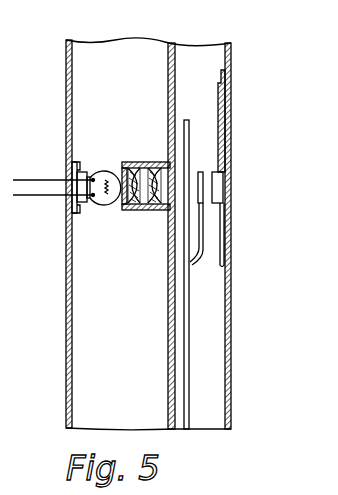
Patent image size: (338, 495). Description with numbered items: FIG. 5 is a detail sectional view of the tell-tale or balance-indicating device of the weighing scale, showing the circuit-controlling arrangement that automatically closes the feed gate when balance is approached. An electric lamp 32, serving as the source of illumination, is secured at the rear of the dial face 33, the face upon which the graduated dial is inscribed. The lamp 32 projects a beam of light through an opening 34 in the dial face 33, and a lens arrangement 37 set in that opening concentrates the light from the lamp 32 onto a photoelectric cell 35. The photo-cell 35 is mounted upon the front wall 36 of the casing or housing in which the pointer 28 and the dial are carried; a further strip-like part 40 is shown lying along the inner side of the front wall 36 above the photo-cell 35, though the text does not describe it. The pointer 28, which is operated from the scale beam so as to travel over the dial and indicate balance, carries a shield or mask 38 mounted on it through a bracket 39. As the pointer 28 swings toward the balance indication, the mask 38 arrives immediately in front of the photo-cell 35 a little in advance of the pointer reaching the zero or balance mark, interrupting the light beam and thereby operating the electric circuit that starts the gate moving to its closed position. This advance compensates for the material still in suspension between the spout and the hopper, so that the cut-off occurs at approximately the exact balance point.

The pointer 28 is at (188, 117).
The electric lamp 32 is at (100, 169).
The dial face 33 is at (169, 292).
The opening 34 is at (162, 212).
The photoelectric cell 35 is at (224, 181).
The front wall 36 is at (231, 241).
The lens arrangement 37 is at (147, 163).
The shield or mask 38 is at (201, 171).
The bracket 39 is at (201, 260).
The shield strip 40 is at (226, 118).